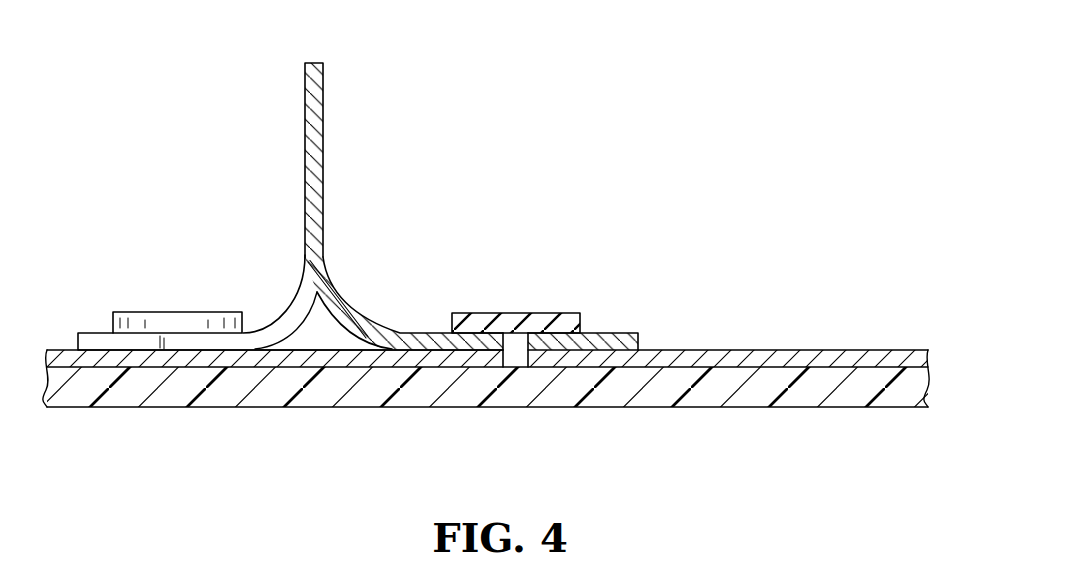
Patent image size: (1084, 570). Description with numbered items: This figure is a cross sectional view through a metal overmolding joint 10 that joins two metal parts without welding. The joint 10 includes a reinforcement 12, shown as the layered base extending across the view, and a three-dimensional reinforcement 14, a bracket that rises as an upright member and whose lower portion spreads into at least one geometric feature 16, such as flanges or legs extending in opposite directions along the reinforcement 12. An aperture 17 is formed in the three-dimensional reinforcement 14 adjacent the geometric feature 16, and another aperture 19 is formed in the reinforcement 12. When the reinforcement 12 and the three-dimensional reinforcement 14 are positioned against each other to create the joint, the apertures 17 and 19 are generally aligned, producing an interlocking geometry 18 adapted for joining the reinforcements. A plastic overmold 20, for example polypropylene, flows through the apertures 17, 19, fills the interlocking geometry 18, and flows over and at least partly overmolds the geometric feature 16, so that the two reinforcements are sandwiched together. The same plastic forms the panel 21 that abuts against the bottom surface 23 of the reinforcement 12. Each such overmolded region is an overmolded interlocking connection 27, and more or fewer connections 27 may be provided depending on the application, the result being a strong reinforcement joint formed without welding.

The metal overmolding joint 10 is at (591, 108).
The reinforcement 12 is at (737, 350).
The 3D reinforcement 14 is at (323, 183).
The geometric feature 16 is at (285, 318).
The aperture 17 is at (505, 342).
The interlocking geometry 18 is at (543, 346).
The aperture 19 is at (509, 352).
The plastic overmold 20 is at (171, 312).
The panel 21 is at (707, 398).
The bottom surface 23 is at (670, 367).
The overmolded interlocking connection 27 is at (146, 259).